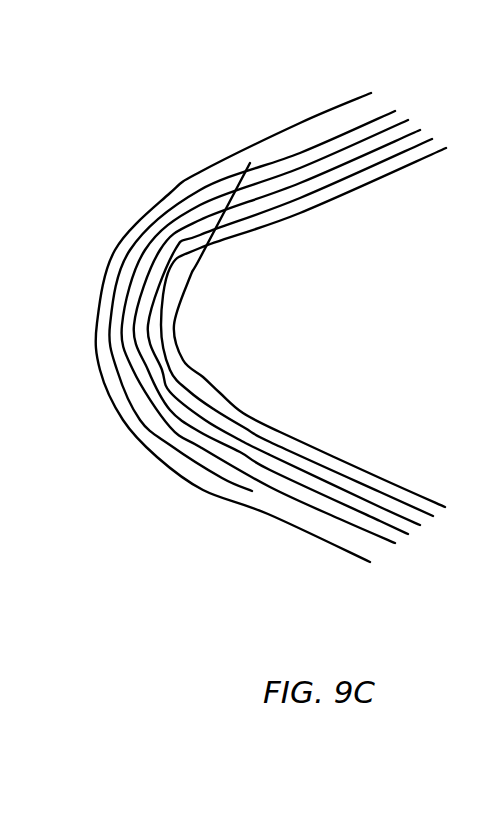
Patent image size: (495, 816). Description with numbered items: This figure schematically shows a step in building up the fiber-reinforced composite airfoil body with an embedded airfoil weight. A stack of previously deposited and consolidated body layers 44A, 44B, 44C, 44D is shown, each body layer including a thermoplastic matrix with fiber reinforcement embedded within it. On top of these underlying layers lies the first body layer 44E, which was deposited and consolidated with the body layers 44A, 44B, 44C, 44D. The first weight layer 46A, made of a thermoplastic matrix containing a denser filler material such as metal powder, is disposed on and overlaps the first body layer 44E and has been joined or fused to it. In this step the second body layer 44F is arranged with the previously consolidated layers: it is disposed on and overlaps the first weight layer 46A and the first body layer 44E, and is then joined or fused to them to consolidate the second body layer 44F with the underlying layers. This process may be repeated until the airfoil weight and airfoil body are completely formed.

The body layer 44A is at (322, 452).
The body layer 44B is at (365, 485).
The body layer 44C is at (405, 517).
The body layer 44D is at (391, 527).
The first body layer 44E is at (342, 520).
The second body layer 44F is at (285, 525).
The first weight layer 46A is at (222, 478).